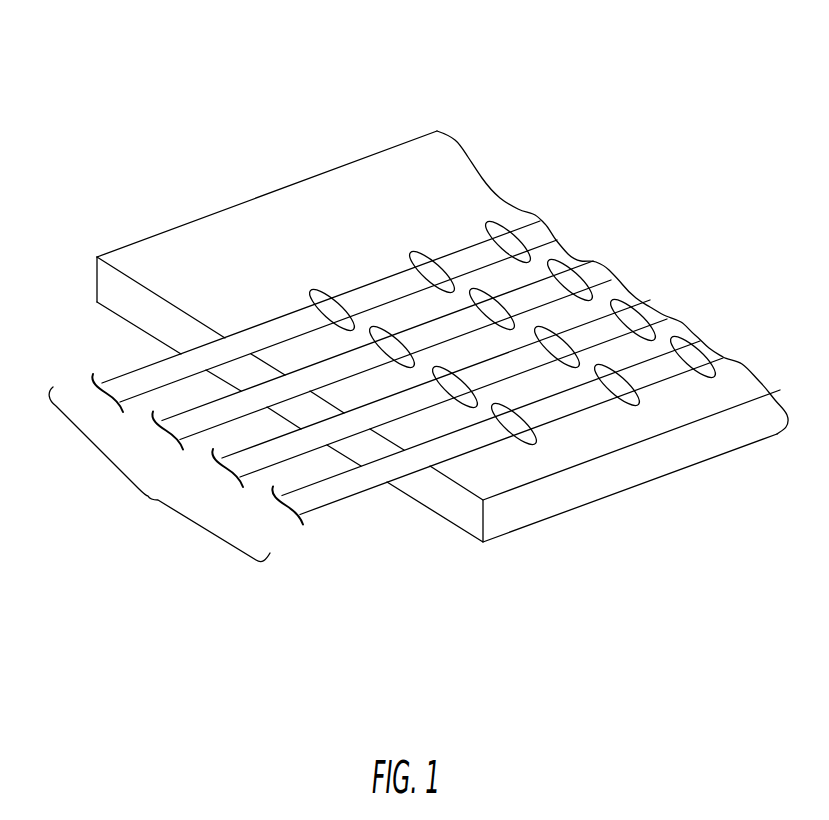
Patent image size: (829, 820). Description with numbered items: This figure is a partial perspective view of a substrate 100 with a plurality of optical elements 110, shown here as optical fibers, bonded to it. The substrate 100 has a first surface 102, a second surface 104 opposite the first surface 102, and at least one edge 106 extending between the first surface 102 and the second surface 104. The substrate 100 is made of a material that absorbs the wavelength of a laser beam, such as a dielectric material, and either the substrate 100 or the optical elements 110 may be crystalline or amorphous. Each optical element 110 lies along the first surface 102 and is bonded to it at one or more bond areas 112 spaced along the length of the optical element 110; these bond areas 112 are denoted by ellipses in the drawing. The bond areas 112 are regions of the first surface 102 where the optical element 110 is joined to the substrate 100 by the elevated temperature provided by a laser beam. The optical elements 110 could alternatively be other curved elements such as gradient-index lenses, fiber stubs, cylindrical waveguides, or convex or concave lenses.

The substrate 100 is at (196, 98).
The first surface 102 is at (394, 176).
The second surface 104 is at (523, 530).
The edge 106 is at (107, 291).
The optical elements 110 is at (159, 474).
The bond areas 112 is at (312, 291).